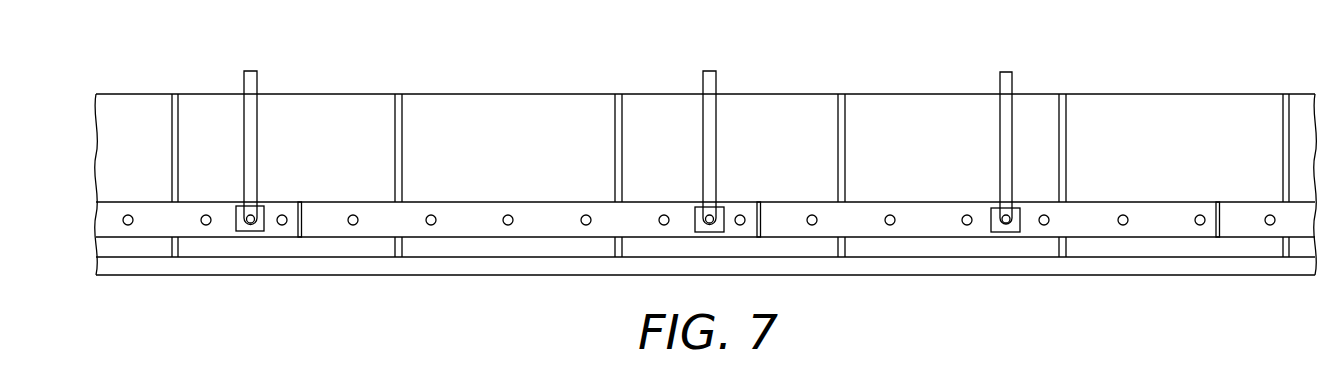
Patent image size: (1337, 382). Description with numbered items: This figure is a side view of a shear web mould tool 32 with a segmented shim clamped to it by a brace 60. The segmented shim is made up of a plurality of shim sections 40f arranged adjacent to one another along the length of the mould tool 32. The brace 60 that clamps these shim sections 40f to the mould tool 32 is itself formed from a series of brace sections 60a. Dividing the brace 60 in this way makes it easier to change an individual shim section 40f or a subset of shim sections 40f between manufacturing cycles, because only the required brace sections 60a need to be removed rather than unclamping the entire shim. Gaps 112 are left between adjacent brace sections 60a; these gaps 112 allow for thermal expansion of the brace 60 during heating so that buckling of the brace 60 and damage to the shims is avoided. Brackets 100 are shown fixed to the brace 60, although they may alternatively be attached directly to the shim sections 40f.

The mould tool 32 is at (1297, 267).
The shim sections 40f is at (195, 108).
The brace 60 is at (150, 227).
The brace sections 60a is at (325, 227).
The brackets 100 is at (250, 70).
The gaps 112 is at (302, 217).